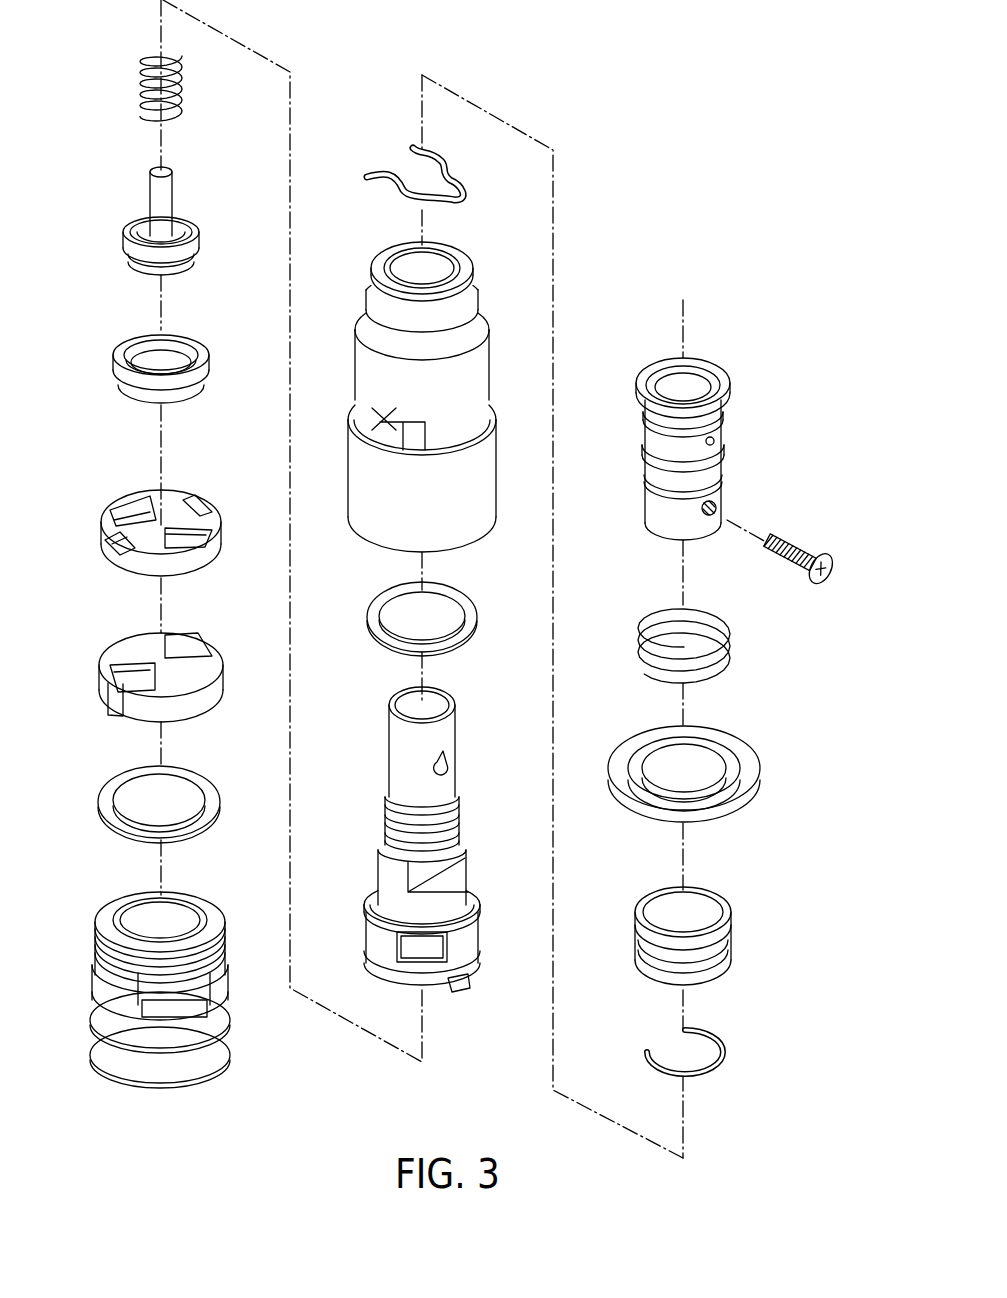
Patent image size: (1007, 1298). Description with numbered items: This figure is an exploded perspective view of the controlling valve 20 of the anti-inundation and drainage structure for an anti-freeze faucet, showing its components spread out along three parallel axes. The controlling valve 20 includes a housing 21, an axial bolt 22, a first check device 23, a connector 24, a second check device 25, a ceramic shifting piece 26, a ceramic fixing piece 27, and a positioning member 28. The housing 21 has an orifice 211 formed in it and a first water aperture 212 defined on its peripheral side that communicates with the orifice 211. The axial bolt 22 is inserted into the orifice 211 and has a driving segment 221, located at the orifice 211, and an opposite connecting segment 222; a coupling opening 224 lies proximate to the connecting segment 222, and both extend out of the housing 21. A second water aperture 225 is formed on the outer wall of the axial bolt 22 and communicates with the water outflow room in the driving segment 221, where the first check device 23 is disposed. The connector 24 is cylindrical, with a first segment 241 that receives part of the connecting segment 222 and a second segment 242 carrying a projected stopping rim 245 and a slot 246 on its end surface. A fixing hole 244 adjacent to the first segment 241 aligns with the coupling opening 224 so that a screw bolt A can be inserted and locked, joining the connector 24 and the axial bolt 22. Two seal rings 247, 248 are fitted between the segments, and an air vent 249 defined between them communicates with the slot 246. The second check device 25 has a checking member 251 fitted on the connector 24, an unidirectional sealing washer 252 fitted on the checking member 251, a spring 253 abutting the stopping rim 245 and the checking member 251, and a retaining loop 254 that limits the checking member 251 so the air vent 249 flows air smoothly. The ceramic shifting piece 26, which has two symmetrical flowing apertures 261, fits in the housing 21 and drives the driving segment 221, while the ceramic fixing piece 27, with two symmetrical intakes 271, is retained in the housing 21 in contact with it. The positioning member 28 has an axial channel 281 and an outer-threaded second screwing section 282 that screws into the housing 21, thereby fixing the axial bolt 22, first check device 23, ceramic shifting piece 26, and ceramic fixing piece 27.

The controlling valve 20 is at (454, 579).
The housing 21 is at (421, 388).
The orifice 211 is at (437, 268).
The first water aperture 212 is at (395, 430).
The axial bolt 22 is at (452, 860).
The driving segment 221 is at (462, 988).
The connecting segment 222 is at (437, 705).
The coupling opening 224 is at (447, 758).
The second water aperture 225 is at (450, 943).
The first check device 23 is at (208, 58).
The connector 24 is at (691, 443).
The first segment 241 is at (700, 537).
The second segment 242 is at (718, 362).
The fixing hole 244 is at (718, 505).
The stopping rim 245 is at (733, 398).
The slot 246 is at (677, 388).
The seal ring 247 is at (643, 460).
The seal ring 248 is at (642, 418).
The air vent 249 is at (715, 441).
The second check device 25 is at (728, 841).
The checking member 251 is at (712, 960).
The unidirectional sealing washer 252 is at (708, 815).
The spring 253 is at (712, 668).
The retaining loop 254 is at (718, 1052).
The ceramic shifting piece 26 is at (176, 515).
The flowing aperture 261 is at (133, 510).
The ceramic fixing piece 27 is at (164, 661).
The intake 271 is at (130, 676).
The positioning member 28 is at (173, 969).
The channel 281 is at (178, 918).
The second screwing section 282 is at (97, 930).
The screw bolt A is at (808, 558).